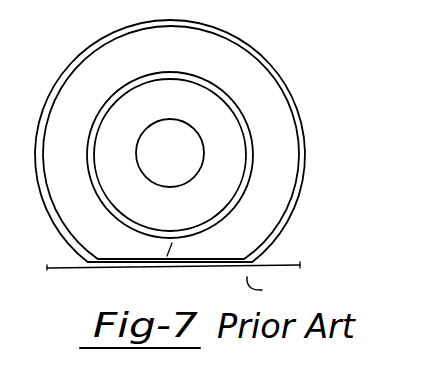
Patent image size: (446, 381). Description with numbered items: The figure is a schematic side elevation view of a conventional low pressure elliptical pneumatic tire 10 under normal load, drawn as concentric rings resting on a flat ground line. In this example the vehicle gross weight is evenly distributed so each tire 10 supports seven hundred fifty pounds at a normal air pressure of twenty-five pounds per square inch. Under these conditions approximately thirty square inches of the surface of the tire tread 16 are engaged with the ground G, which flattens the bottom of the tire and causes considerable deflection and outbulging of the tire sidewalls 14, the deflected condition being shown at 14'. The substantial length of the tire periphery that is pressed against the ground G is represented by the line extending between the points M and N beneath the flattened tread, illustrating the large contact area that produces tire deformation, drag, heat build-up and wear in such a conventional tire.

The pneumatic tire 10 is at (345, 43).
The tire sidewalls 14 is at (222, 155).
The deflected sidewall 14' is at (170, 155).
The tire tread 16 is at (298, 205).
The ground G is at (283, 263).
The end point of contact line N is at (262, 290).
The end point of contact line M is at (93, 268).